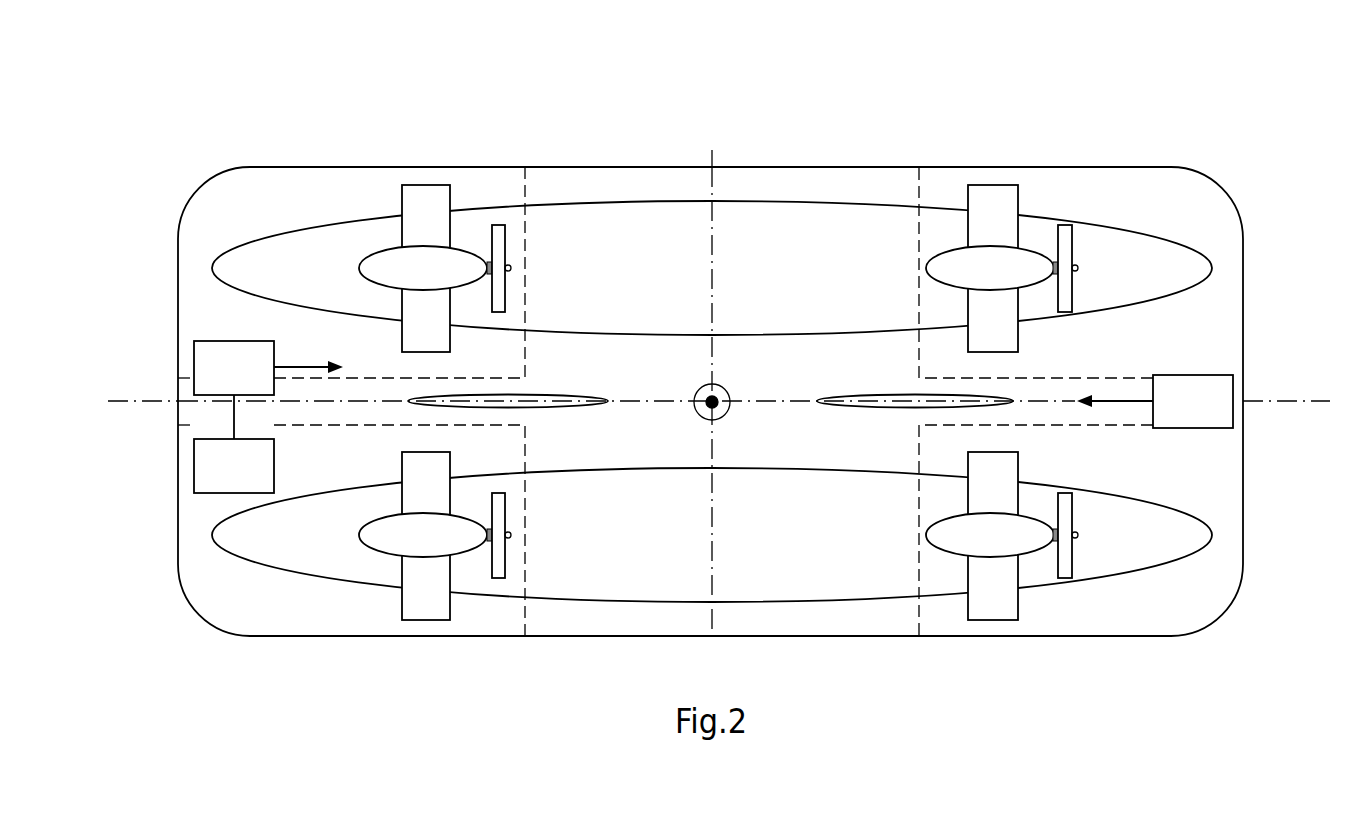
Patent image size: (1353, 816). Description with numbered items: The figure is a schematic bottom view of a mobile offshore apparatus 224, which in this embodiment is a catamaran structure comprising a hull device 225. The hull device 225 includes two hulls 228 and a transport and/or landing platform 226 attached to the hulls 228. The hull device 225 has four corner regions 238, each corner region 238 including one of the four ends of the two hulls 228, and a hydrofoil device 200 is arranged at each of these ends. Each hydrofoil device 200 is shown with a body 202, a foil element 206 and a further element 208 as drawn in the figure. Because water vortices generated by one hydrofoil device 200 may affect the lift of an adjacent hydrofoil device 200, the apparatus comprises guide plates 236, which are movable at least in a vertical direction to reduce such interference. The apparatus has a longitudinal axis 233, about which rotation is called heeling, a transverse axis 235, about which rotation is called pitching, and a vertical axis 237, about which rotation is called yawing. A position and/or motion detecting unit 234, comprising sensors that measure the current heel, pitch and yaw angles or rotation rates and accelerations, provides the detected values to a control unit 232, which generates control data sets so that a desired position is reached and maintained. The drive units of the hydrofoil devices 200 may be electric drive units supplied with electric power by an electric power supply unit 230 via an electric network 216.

The hydrofoil device 200 is at (372, 231).
The motor housing 202 is at (370, 268).
The propeller 206 is at (441, 205).
The fin 208 is at (500, 243).
The electric network 216 is at (307, 366).
The mobile offshore apparatus 224 is at (1268, 120).
The hull device 225 is at (170, 160).
The transport and/or landing platform 226 is at (826, 183).
The hull 228 is at (747, 228).
The electric power supply unit 230 is at (1193, 401).
The control unit 232 is at (234, 368).
The longitudinal axis 233 is at (1308, 400).
The position and/or motion detecting unit 234 is at (234, 444).
The transverse axis 235 is at (711, 248).
The guide plate 236 is at (568, 400).
The vertical axis 237 is at (703, 413).
The corner region 238 is at (525, 293).